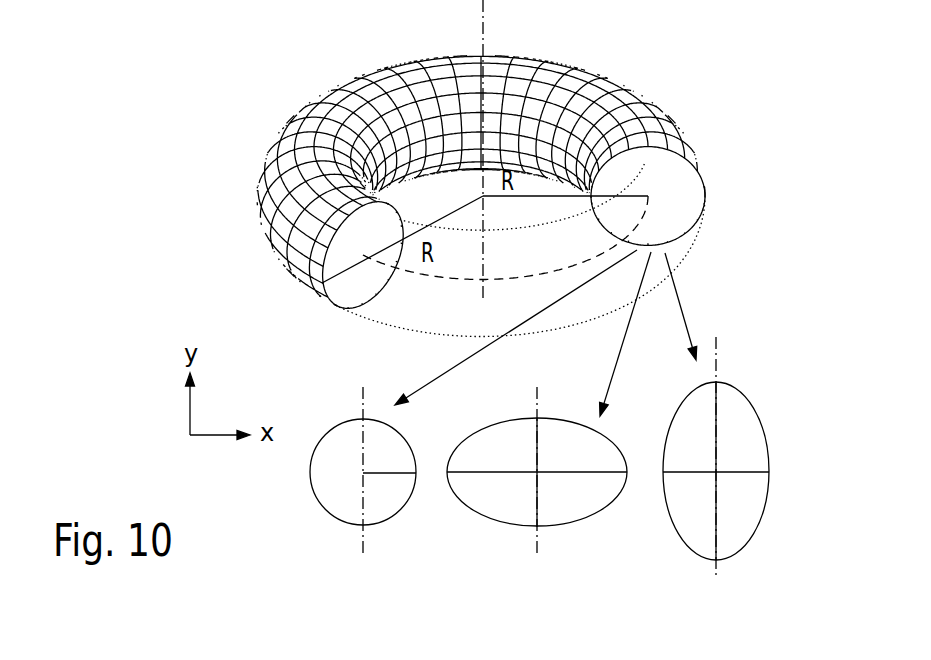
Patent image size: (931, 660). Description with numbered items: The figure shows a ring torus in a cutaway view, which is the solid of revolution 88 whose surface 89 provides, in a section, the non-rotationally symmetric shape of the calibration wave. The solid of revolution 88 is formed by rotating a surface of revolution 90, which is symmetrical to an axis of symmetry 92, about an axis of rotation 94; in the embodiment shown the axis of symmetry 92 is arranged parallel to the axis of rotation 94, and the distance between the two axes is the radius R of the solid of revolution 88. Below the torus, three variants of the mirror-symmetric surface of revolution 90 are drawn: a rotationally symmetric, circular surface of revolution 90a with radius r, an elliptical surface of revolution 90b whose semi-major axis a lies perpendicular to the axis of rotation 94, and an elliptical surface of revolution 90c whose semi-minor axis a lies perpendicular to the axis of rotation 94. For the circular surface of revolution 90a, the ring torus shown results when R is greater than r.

The solid of revolution 88 is at (605, 78).
The surface 89 is at (350, 100).
The surface of revolution 90 is at (687, 199).
The circular surface of revolution 90a is at (315, 495).
The elliptical surface of revolution 90b is at (503, 422).
The elliptical surface of revolution 90c is at (762, 427).
The axis of symmetry 92 is at (360, 405).
The axis of rotation 94 is at (478, 33).